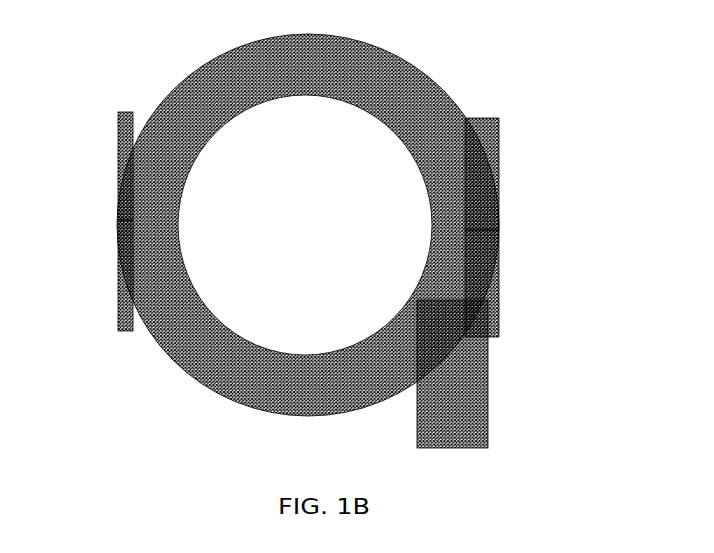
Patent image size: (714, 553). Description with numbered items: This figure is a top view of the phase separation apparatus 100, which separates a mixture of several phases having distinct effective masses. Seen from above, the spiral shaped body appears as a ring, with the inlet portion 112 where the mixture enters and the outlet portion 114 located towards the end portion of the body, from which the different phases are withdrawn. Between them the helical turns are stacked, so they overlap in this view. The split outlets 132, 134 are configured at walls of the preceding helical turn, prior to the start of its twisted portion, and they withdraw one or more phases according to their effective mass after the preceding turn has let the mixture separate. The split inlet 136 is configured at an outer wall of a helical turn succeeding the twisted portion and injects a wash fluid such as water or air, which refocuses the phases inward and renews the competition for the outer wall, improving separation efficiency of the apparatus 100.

The phase separation apparatus 100 is at (464, 57).
The inlet portion 112 is at (501, 141).
The outlet portion 114 is at (491, 391).
The split outlet 132 is at (118, 133).
The split outlet 134 is at (498, 295).
The split inlet 136 is at (118, 313).